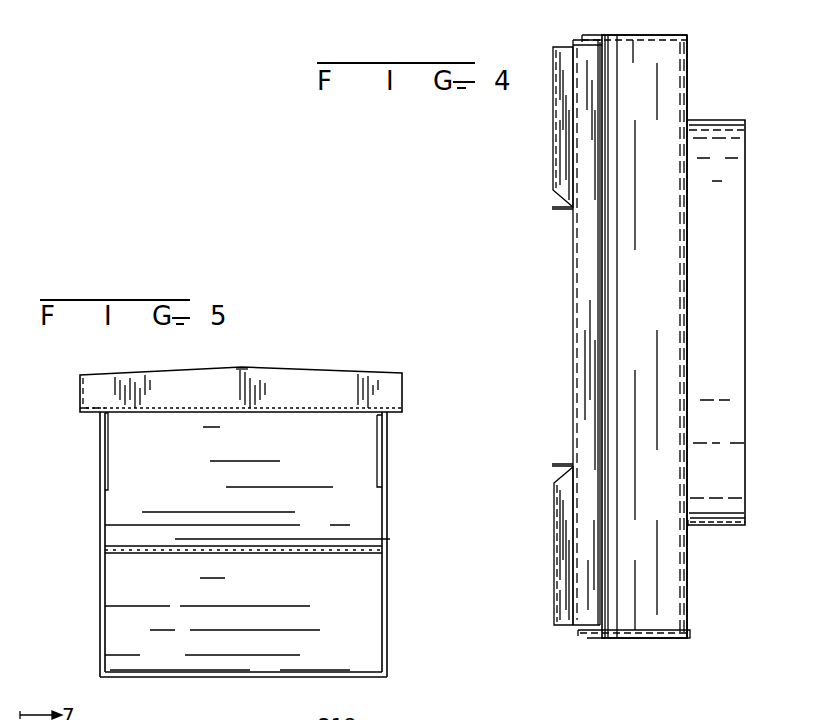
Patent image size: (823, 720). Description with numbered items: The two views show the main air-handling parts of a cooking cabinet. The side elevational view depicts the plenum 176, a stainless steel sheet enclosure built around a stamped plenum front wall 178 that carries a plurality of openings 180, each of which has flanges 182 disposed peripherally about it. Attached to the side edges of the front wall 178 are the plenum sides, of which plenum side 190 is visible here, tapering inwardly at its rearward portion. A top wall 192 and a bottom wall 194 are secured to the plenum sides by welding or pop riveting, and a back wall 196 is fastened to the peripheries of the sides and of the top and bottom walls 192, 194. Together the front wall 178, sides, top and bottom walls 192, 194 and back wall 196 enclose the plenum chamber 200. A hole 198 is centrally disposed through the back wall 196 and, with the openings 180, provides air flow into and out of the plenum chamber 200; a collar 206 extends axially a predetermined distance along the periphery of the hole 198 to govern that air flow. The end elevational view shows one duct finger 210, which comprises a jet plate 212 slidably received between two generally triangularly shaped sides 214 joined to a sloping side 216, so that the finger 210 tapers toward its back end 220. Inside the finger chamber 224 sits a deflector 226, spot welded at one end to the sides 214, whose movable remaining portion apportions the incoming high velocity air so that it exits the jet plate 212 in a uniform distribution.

In FIG. 4, the plenum 176 is at (688, 47).
In FIG. 4, the plenum front wall 178 is at (572, 332).
In FIG. 4, the openings 180 is at (570, 88).
In FIG. 4, the flanges 182 is at (563, 47).
In FIG. 4, the plenum side 190 is at (648, 53).
In FIG. 4, the top wall 192 is at (645, 33).
In FIG. 4, the bottom wall 194 is at (648, 640).
In FIG. 4, the back wall 196 is at (688, 82).
In FIG. 4, the hole 198 is at (700, 507).
In FIG. 4, the plenum chamber 200 is at (652, 325).
In FIG. 4, the collar 206 is at (727, 120).
In FIG. 5, the duct finger 210 is at (313, 383).
In FIG. 5, the jet plate 212 is at (242, 370).
In FIG. 5, the sides 214 is at (100, 500).
In FIG. 5, the sloping side 216 is at (245, 678).
In FIG. 5, the back end 220 is at (387, 597).
In FIG. 5, the finger chamber 224 is at (172, 486).
In FIG. 5, the deflector 226 is at (138, 553).